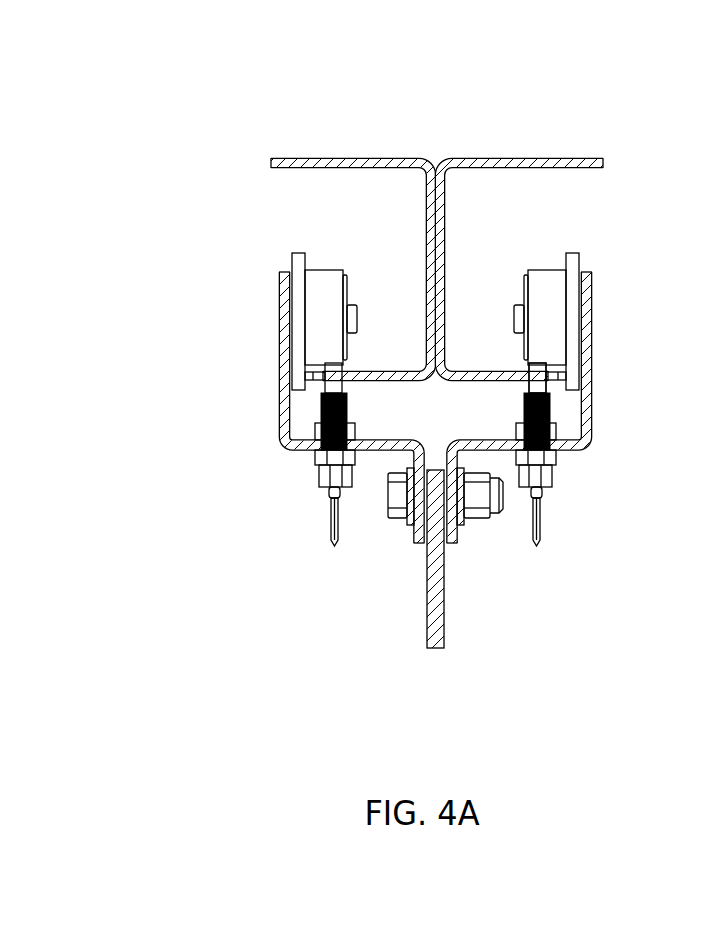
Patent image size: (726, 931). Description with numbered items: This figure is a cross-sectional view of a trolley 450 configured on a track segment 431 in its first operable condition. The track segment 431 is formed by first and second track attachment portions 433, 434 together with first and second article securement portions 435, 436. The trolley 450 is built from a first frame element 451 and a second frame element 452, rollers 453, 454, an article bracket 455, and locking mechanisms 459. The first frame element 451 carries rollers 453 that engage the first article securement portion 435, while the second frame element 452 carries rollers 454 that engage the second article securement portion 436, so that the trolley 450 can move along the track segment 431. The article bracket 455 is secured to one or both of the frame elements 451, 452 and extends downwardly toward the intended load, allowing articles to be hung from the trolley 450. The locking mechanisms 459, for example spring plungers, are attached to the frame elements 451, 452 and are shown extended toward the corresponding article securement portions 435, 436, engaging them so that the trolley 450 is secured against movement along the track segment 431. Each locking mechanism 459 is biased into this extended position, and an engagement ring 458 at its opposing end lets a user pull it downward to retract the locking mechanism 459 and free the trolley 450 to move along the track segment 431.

The track segment 431 is at (422, 212).
The first track attachment portion 433 is at (321, 233).
The second track attachment portion 434 is at (551, 233).
The first article securement portion 435 is at (398, 372).
The second article securement portion 436 is at (467, 372).
The trolley 450 is at (437, 503).
The first frame element 451 is at (287, 440).
The second frame element 452 is at (585, 440).
The rollers 453 is at (437, 453).
The rollers 454 is at (558, 338).
The article bracket 455 is at (443, 640).
The engagement ring 458 is at (333, 545).
The locking mechanism 459 is at (328, 382).